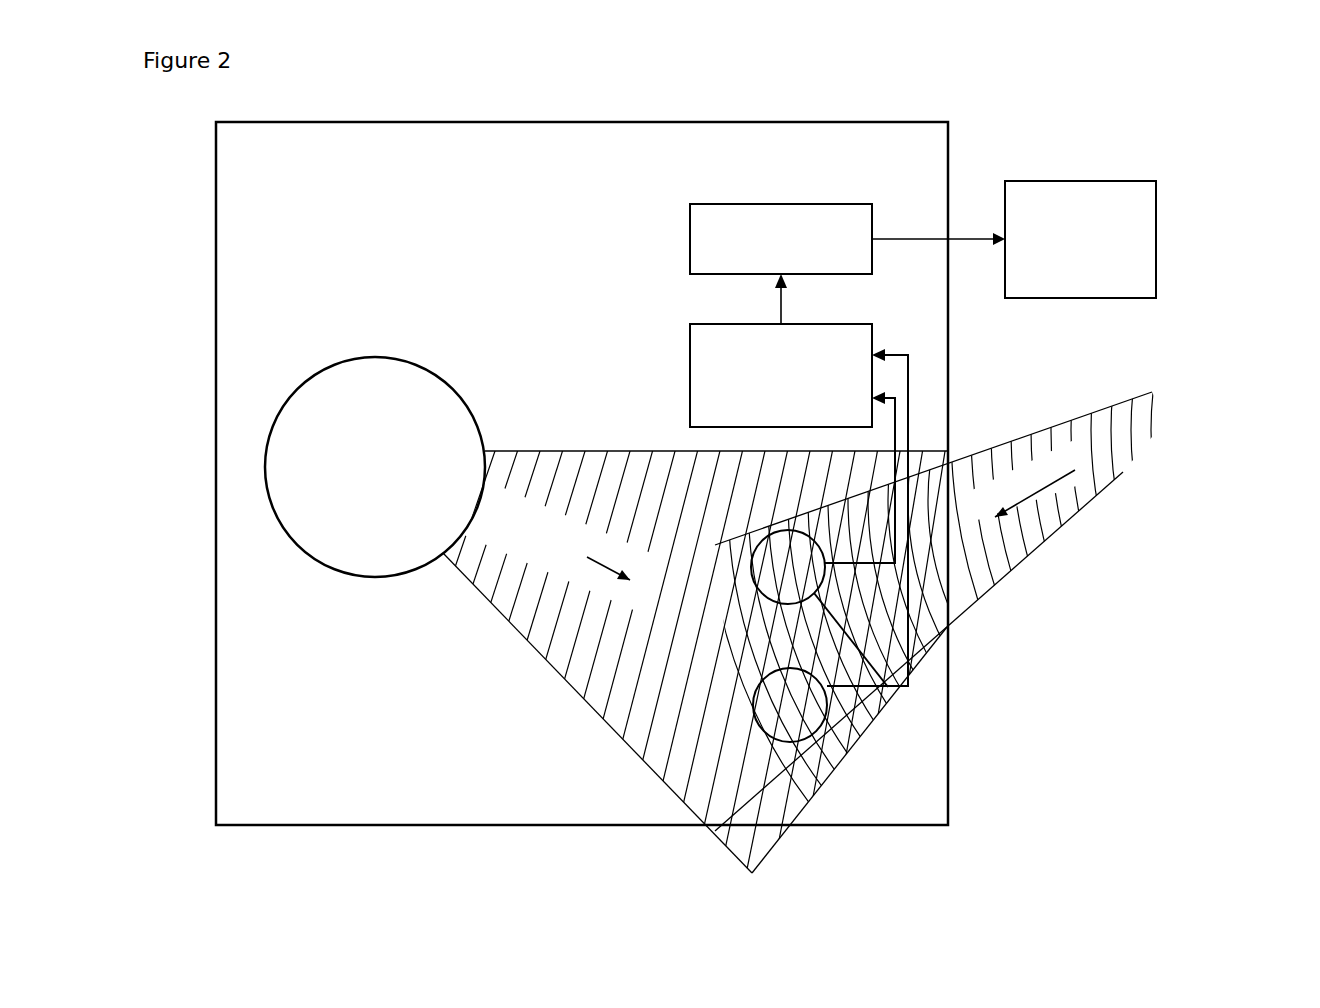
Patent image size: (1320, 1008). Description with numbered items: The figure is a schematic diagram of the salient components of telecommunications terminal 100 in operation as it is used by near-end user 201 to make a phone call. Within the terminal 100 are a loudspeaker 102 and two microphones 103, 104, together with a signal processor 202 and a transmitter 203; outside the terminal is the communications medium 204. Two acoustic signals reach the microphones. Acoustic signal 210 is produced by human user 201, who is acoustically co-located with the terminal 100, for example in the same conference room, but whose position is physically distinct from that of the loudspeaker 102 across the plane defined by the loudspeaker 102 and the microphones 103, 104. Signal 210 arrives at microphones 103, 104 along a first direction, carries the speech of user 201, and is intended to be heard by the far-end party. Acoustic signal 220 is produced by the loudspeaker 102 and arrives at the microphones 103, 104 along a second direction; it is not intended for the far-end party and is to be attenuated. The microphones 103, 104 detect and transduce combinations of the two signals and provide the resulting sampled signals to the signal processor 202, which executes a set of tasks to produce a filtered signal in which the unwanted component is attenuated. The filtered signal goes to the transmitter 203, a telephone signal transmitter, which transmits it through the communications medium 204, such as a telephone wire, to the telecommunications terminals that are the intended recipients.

The telecommunications terminal 100 is at (582, 473).
The loudspeaker 102 is at (328, 365).
The microphone 103 is at (830, 730).
The microphone 104 is at (878, 688).
The near-end user 201 is at (1230, 448).
The signal processor 202 is at (690, 367).
The transmitter 203 is at (690, 239).
The communications medium 204 is at (1156, 238).
The acoustic signal 210 is at (1000, 588).
The acoustic signal 220 is at (587, 703).